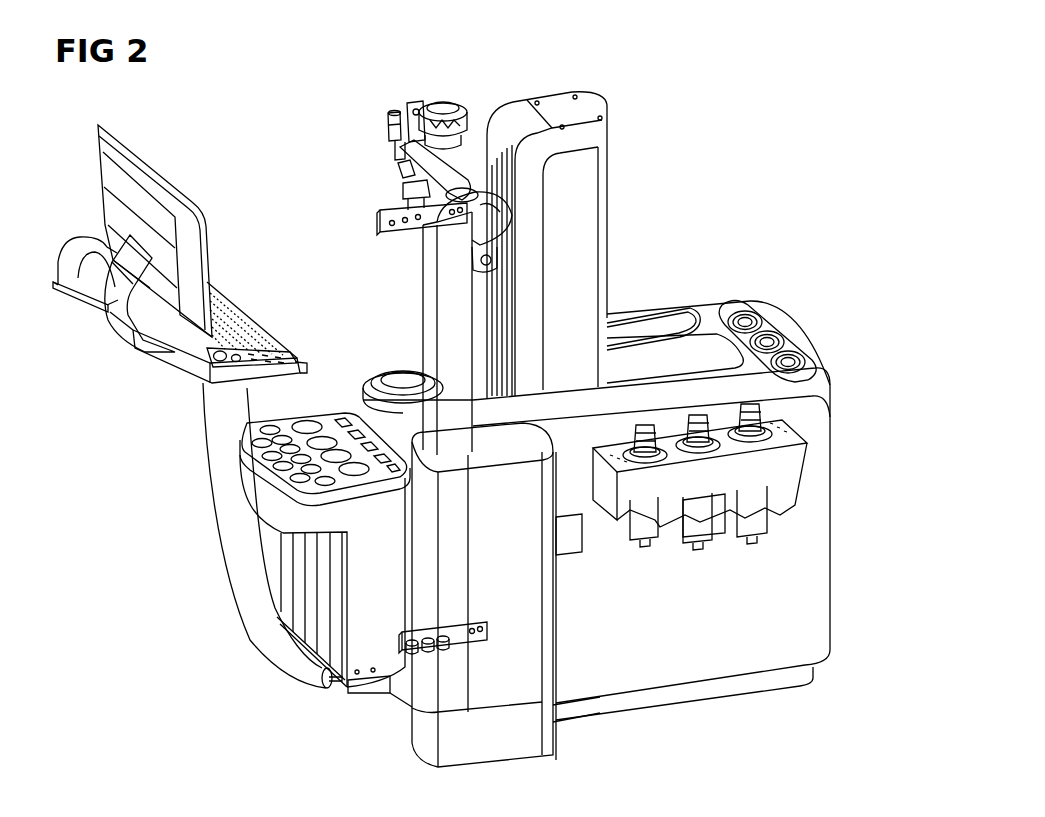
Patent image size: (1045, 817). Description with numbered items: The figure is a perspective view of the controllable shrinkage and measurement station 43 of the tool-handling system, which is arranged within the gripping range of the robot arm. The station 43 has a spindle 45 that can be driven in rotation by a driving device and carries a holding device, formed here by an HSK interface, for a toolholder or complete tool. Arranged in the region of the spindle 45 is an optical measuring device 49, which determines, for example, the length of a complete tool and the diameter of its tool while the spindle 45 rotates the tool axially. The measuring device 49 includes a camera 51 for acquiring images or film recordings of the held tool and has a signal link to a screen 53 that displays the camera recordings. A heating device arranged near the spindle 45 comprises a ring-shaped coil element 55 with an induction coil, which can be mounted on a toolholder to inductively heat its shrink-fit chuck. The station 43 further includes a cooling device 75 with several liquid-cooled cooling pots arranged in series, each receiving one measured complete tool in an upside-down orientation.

The shrinkage and measurement station 43 is at (727, 160).
The spindle 45 is at (395, 385).
The measuring device 49 is at (635, 97).
The camera 51 is at (390, 208).
The screen 53 is at (160, 200).
The ring-shaped coil element 55 is at (452, 110).
The cooling device 75 is at (837, 405).